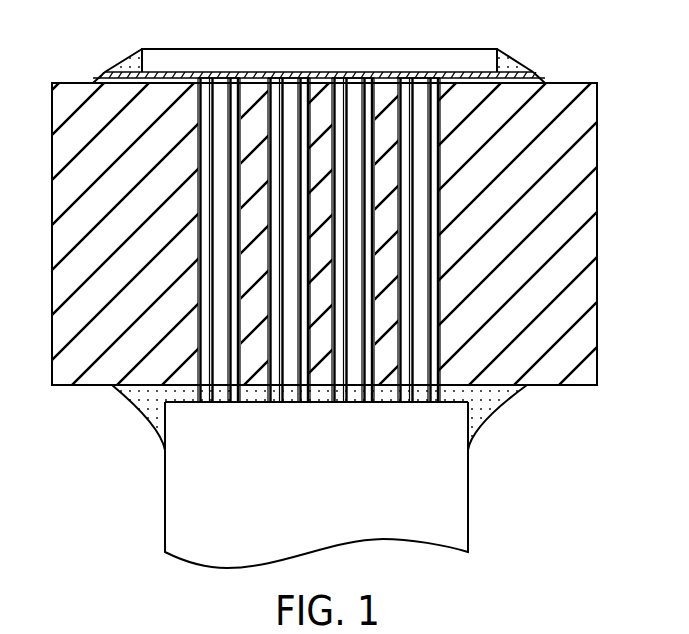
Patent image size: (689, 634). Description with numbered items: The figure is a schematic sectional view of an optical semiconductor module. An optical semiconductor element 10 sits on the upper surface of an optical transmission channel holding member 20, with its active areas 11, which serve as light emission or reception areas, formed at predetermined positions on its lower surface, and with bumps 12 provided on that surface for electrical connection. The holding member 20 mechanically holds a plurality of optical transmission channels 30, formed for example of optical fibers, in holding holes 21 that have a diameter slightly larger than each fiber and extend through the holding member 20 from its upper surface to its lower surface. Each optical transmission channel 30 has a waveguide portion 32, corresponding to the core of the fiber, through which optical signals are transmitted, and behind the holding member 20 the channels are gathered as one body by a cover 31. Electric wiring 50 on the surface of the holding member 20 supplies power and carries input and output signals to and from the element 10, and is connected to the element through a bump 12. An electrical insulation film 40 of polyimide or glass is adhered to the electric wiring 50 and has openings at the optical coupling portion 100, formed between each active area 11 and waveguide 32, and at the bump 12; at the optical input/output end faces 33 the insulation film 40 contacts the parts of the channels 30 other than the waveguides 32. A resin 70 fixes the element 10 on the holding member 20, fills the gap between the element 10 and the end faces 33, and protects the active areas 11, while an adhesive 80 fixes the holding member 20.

The optical semiconductor element 10 is at (177, 58).
The active areas 11 is at (222, 73).
The bumps 12 is at (462, 73).
The optical transmission channel holding member 20 is at (68, 181).
The holding holes 21 is at (198, 178).
The optical transmission channels 30 is at (430, 282).
The cover 31 is at (462, 496).
The waveguide portion 32 is at (420, 203).
The optical input/output end faces 33 is at (421, 73).
The electrical insulation film 40 is at (506, 72).
The electric wiring 50 is at (545, 81).
The resin 70 is at (133, 63).
The adhesive 80 is at (147, 407).
The optical coupling portion 100 is at (295, 73).